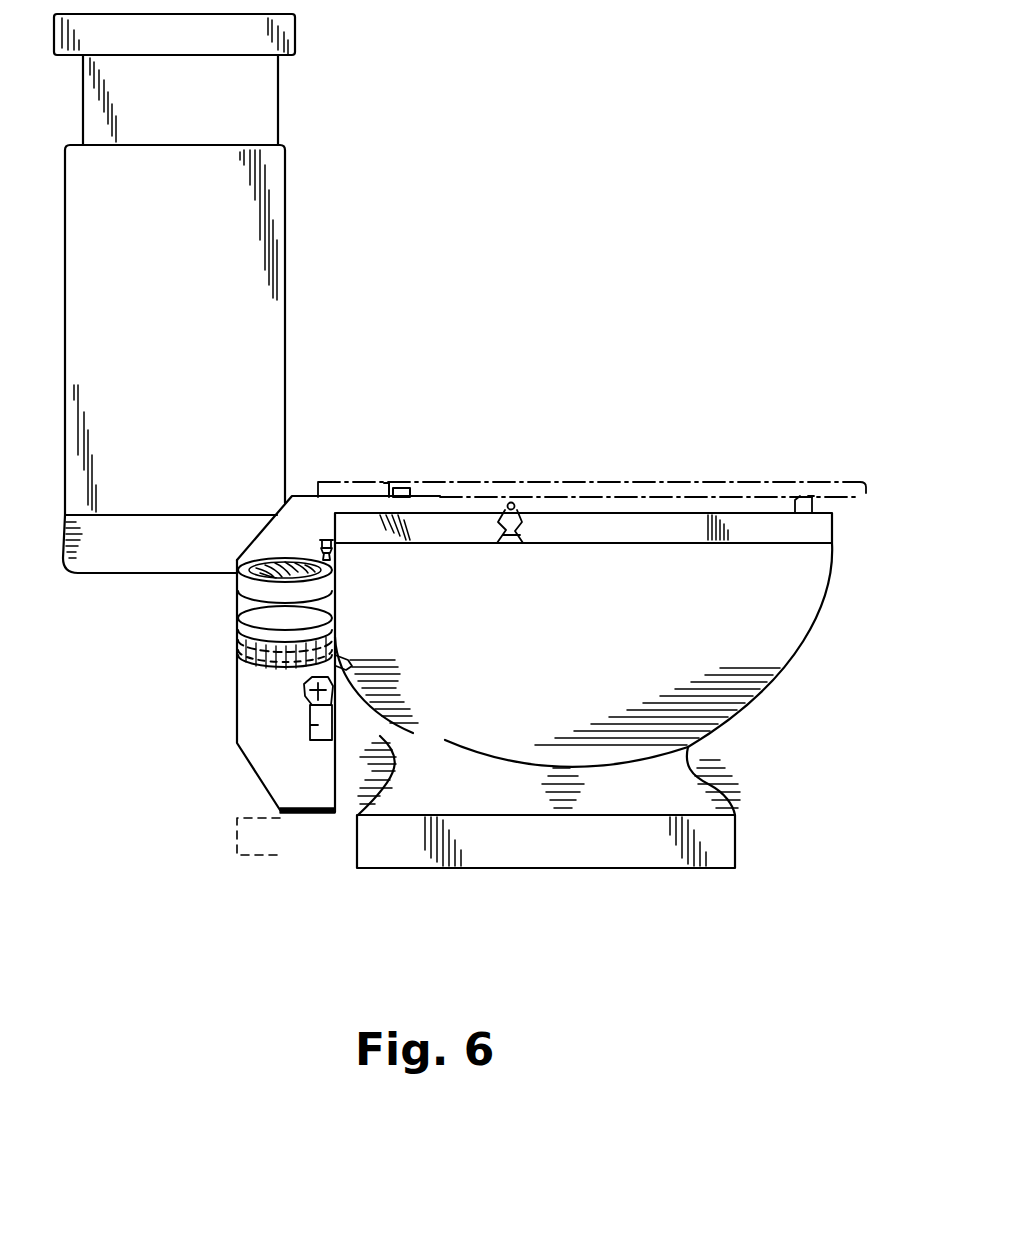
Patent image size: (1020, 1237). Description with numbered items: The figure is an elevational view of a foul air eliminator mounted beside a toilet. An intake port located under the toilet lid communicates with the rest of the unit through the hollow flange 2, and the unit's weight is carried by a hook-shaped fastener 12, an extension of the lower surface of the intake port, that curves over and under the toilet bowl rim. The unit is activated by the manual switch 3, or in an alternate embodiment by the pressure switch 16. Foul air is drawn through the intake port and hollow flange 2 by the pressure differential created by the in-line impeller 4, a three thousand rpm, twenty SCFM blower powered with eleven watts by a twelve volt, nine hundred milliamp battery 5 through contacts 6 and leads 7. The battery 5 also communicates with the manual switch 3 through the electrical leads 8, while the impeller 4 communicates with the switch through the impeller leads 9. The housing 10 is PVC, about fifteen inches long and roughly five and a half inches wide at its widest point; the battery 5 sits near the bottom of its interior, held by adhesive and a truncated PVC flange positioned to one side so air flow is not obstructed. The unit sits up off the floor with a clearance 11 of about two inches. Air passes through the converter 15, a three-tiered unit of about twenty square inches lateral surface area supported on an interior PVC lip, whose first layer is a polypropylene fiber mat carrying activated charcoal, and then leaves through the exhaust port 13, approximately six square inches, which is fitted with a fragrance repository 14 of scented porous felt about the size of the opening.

The hollow flange 2 is at (307, 512).
The manual switch 3 is at (389, 486).
The in-line impeller 4 is at (334, 578).
The battery 5 is at (413, 732).
The contacts 6 is at (333, 689).
The leads 7 is at (350, 664).
The electrical leads 8 is at (408, 488).
The impeller leads 9 is at (320, 545).
The housing 10 is at (394, 767).
The clearance 11 is at (236, 818).
The hook-shaped fastener 12 is at (436, 497).
The exhaust port 13 is at (533, 545).
The fragrance repository 14 is at (305, 814).
The converter 15 is at (229, 617).
The pressure switch 16 is at (514, 504).